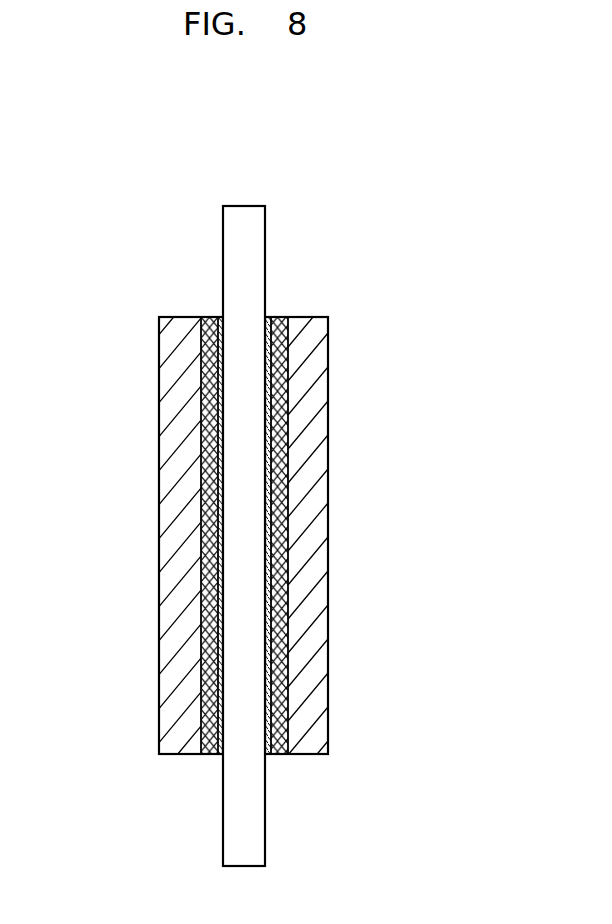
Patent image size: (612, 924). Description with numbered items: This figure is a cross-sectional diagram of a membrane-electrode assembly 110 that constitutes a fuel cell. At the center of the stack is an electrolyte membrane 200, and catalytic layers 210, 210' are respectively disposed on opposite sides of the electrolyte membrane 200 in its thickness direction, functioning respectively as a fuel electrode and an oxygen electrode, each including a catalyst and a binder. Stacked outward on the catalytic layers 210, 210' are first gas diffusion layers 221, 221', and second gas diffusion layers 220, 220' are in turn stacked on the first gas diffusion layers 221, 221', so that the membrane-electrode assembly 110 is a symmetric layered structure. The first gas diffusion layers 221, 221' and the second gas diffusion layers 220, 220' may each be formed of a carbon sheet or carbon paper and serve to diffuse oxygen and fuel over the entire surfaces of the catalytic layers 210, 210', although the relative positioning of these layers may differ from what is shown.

The membrane-electrode assembly 110 is at (110, 226).
The electrolyte membrane 200 is at (243, 212).
The catalytic layer 210 is at (197, 572).
The catalytic layer 210' is at (294, 572).
The second gas diffusion layer 220 is at (139, 535).
The second gas diffusion layer 220' is at (351, 535).
The first gas diffusion layer 221 is at (188, 500).
The first gas diffusion layer 221' is at (302, 500).